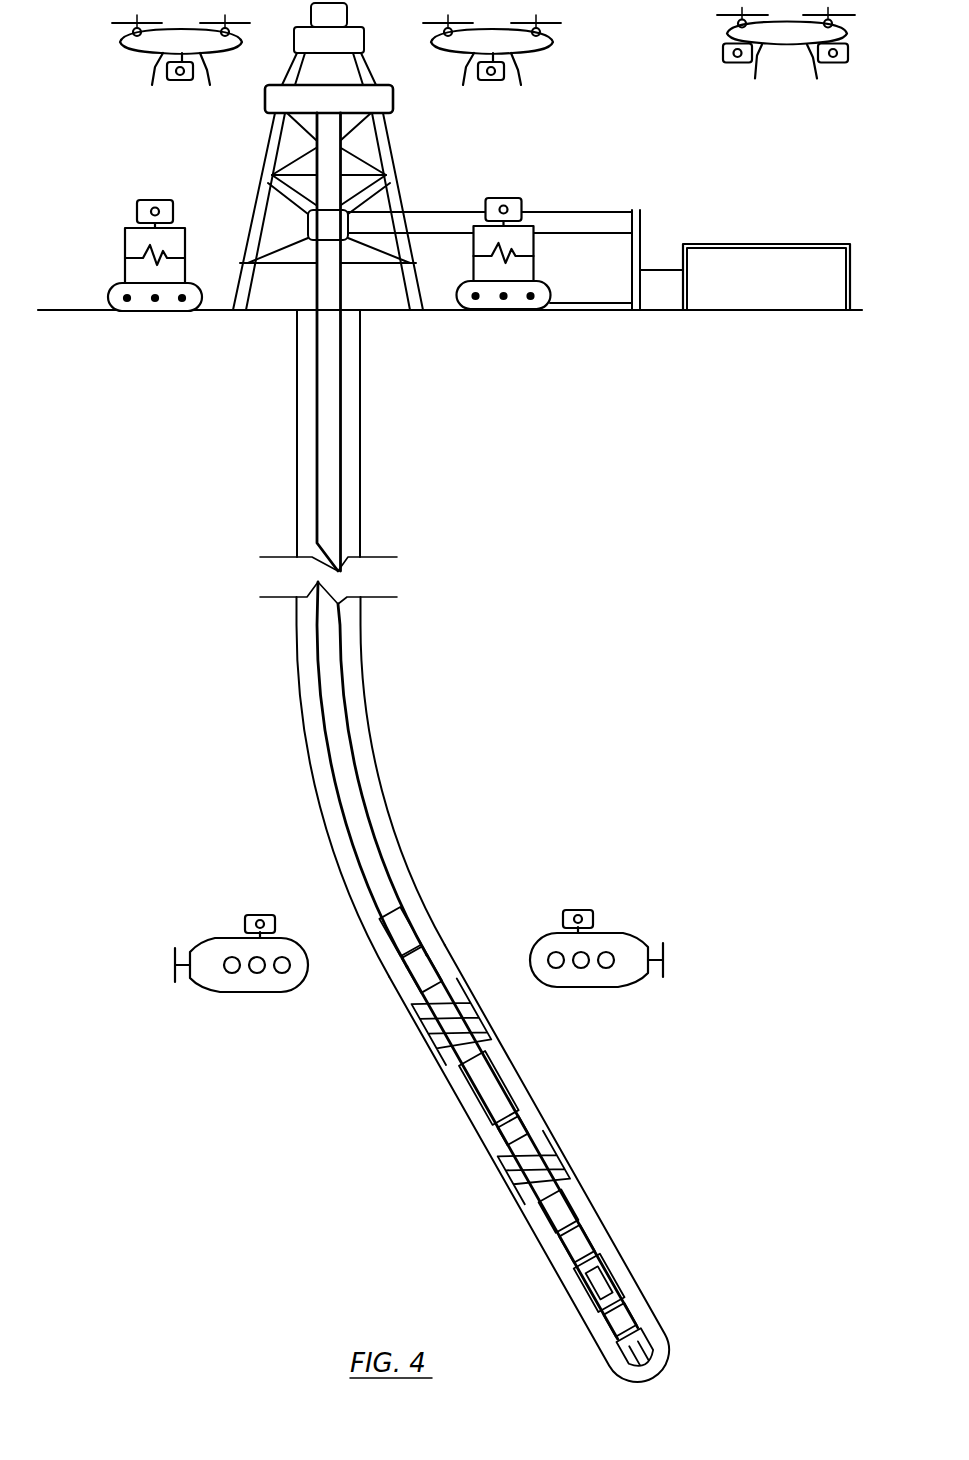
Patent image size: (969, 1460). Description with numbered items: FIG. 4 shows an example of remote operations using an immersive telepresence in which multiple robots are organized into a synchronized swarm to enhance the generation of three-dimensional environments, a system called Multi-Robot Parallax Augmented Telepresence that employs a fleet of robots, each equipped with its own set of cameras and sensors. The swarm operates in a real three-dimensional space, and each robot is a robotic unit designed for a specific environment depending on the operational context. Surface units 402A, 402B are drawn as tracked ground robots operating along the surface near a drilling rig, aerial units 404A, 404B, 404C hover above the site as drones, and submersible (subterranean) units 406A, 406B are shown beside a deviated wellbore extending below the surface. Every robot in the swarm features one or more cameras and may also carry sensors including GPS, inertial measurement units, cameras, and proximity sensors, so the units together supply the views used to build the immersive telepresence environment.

The surface unit 402A is at (175, 340).
The surface unit 402B is at (528, 340).
The aerial unit 404A is at (208, 114).
The aerial unit 404B is at (520, 114).
The aerial unit 404C is at (810, 105).
The submersible unit 406A is at (295, 1012).
The submersible unit 406B is at (602, 1012).